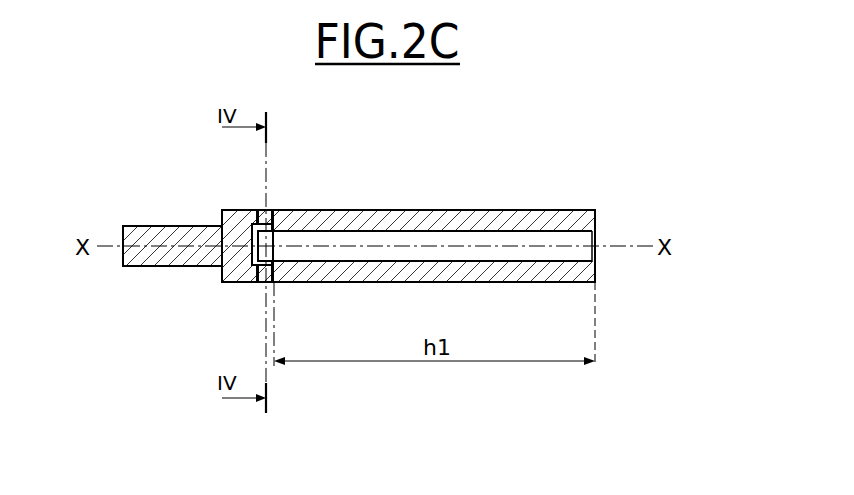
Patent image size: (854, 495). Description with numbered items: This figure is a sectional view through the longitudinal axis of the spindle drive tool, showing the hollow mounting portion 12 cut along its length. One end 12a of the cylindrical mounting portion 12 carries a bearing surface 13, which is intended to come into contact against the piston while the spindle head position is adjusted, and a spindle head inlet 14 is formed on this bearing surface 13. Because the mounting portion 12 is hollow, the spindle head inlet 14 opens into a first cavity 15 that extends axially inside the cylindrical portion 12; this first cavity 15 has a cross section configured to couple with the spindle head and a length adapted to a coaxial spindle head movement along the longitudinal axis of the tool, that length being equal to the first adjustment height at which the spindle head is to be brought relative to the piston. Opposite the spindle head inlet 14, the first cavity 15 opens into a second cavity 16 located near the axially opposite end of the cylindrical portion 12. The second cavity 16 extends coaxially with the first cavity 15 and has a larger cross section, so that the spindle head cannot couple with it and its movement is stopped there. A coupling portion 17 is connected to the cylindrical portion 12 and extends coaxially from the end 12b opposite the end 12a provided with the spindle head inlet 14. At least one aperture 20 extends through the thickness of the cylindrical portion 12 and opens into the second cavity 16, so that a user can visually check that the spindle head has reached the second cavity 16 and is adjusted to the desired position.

The mounting portion 12 is at (434, 204).
The end of the mounting portion 12a is at (585, 210).
The end of the cylindrical portion 12b is at (227, 210).
The bearing surface 13 is at (597, 270).
The spindle head inlet 14 is at (594, 243).
The first cavity 15 is at (486, 240).
The second cavity 16 is at (280, 210).
The coupling portion 17 is at (170, 270).
The aperture 20 is at (262, 210).